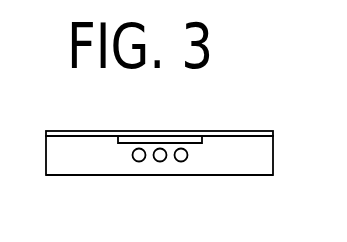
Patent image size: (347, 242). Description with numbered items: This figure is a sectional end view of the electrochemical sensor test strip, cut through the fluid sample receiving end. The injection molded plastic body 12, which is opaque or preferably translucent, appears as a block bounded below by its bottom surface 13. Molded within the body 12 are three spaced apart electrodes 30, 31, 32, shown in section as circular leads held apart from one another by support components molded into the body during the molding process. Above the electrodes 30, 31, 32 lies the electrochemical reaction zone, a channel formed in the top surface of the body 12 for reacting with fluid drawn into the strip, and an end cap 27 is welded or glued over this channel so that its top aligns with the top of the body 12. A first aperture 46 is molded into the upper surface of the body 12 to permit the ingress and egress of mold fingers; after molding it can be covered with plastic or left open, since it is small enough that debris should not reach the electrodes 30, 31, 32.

The body 12 is at (268, 157).
The bottom surface 13 is at (65, 176).
The end cap 27 is at (237, 131).
The electrode 30 is at (139, 148).
The electrode 31 is at (160, 148).
The electrode 32 is at (181, 148).
The first aperture 46 is at (123, 144).